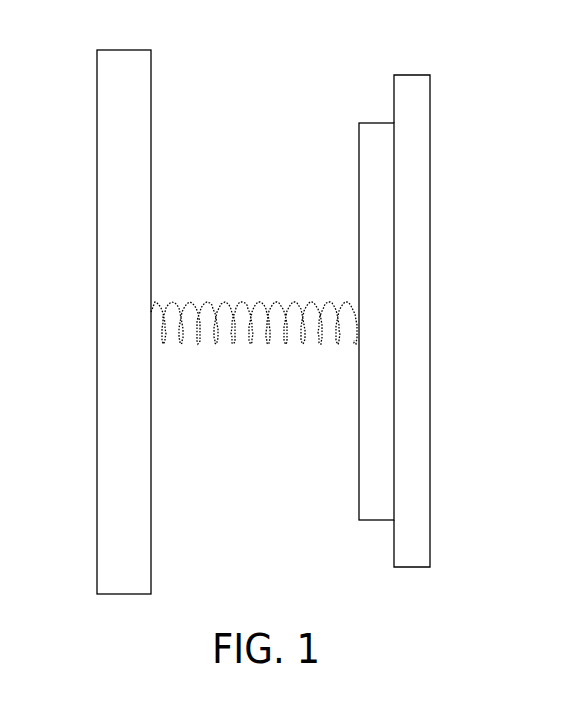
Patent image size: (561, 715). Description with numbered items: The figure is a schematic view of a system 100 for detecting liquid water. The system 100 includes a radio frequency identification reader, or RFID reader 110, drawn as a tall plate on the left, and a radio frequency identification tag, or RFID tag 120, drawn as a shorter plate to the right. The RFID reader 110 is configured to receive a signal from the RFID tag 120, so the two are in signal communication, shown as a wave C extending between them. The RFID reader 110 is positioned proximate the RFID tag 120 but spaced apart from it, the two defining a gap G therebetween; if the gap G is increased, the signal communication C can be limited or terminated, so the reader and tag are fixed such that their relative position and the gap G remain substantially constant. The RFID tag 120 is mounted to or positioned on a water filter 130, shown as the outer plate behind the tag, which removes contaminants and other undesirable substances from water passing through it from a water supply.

The system for detecting liquid water 100 is at (66, 63).
The RFID reader 110 is at (151, 168).
The RFID tag 120 is at (359, 168).
The water filter 130 is at (430, 167).
The wave C is at (249, 290).
The gap G is at (348, 501).